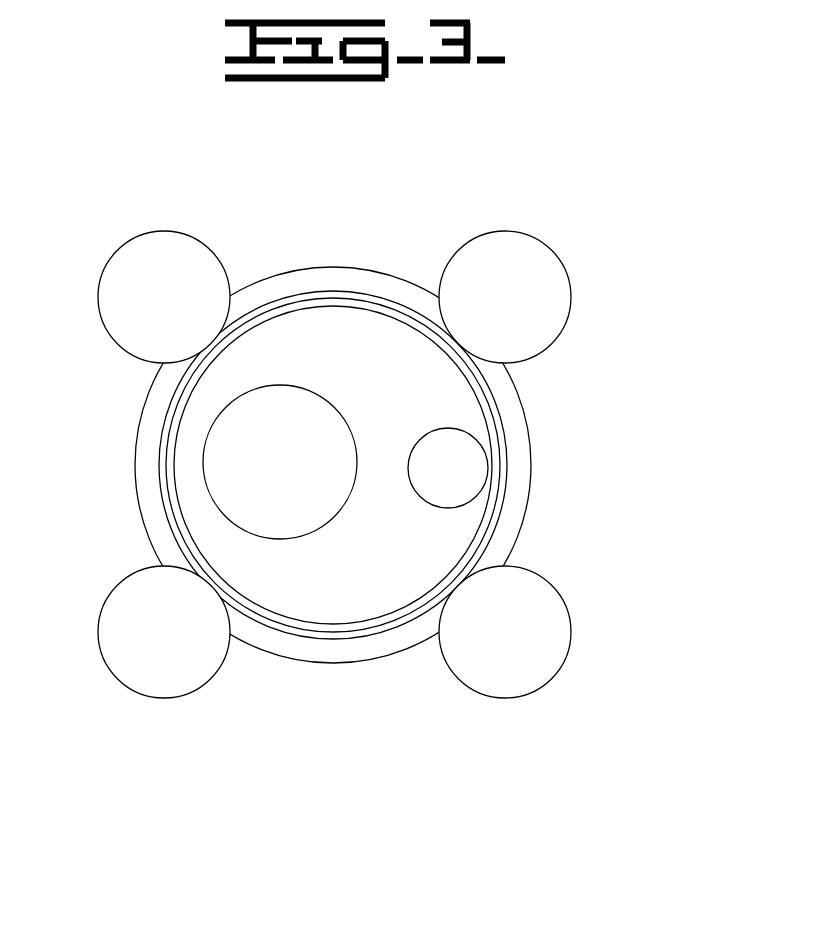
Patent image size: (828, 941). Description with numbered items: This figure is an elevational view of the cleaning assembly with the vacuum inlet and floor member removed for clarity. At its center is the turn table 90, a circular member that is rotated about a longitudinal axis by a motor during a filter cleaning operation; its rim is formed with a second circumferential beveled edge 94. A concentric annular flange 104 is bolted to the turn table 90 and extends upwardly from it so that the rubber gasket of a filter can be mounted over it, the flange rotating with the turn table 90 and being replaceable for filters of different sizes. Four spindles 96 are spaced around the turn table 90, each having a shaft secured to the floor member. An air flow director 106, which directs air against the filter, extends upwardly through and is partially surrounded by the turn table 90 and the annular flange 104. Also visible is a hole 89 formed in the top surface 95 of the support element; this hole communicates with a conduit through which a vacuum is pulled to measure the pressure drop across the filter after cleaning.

The turn table 90 is at (384, 490).
The second circumferential beveled edge 94 is at (362, 653).
The annular flange 104 is at (495, 490).
The top surface 95 is at (327, 325).
The hole 89 is at (220, 414).
The air flow director 106 is at (478, 437).
The spindles 96 is at (137, 231).